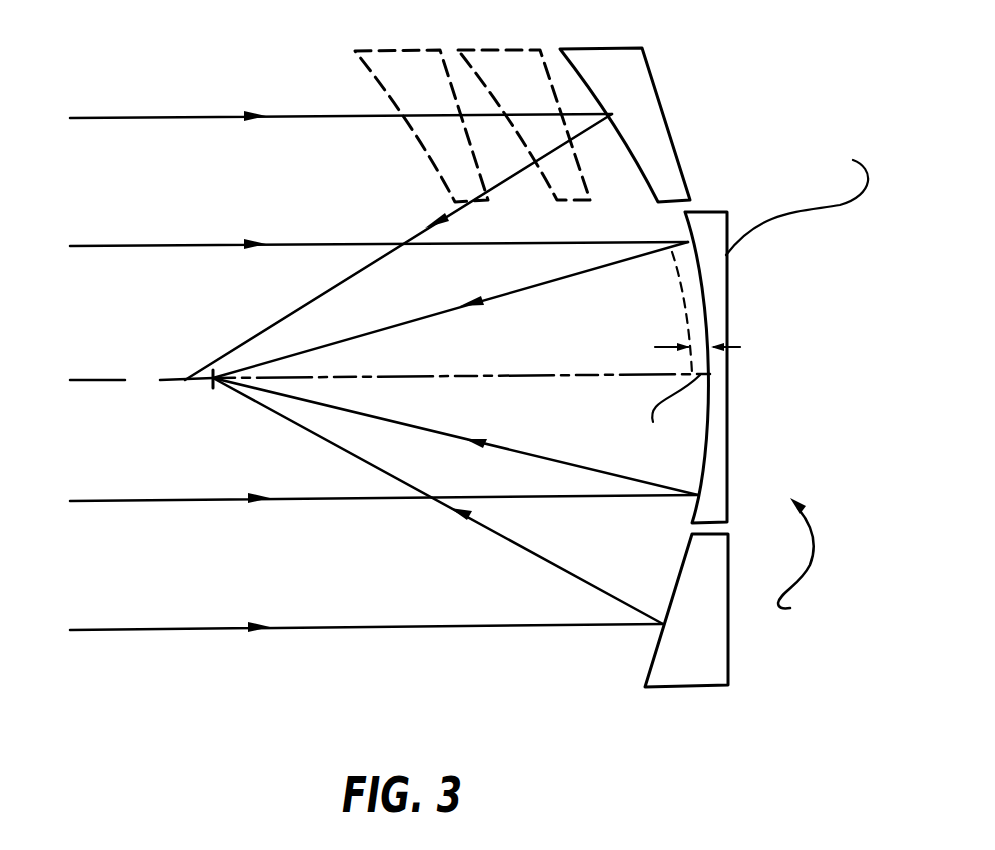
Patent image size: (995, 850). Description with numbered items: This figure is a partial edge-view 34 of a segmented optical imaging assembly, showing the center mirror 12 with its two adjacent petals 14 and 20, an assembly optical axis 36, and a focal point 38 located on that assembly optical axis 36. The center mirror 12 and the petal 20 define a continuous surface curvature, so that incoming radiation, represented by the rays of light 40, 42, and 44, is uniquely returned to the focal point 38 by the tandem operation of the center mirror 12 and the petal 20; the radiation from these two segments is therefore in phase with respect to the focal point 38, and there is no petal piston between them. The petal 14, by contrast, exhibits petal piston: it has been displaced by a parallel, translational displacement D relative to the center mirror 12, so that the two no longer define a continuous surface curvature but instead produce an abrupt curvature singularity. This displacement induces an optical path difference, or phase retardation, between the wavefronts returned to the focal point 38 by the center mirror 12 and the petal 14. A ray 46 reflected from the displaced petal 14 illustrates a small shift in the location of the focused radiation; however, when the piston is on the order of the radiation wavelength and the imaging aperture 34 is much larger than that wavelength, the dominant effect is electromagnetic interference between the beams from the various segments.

The center mirror 12 is at (727, 313).
The petal 14 is at (660, 103).
The petal 20 is at (722, 643).
The partial edge-view 34 is at (800, 559).
The assembly optical axis 36 is at (150, 378).
The focal point 38 is at (212, 384).
The ray of light 40 is at (152, 631).
The ray of light 42 is at (146, 502).
The ray of light 44 is at (160, 246).
The ray 46 is at (157, 118).